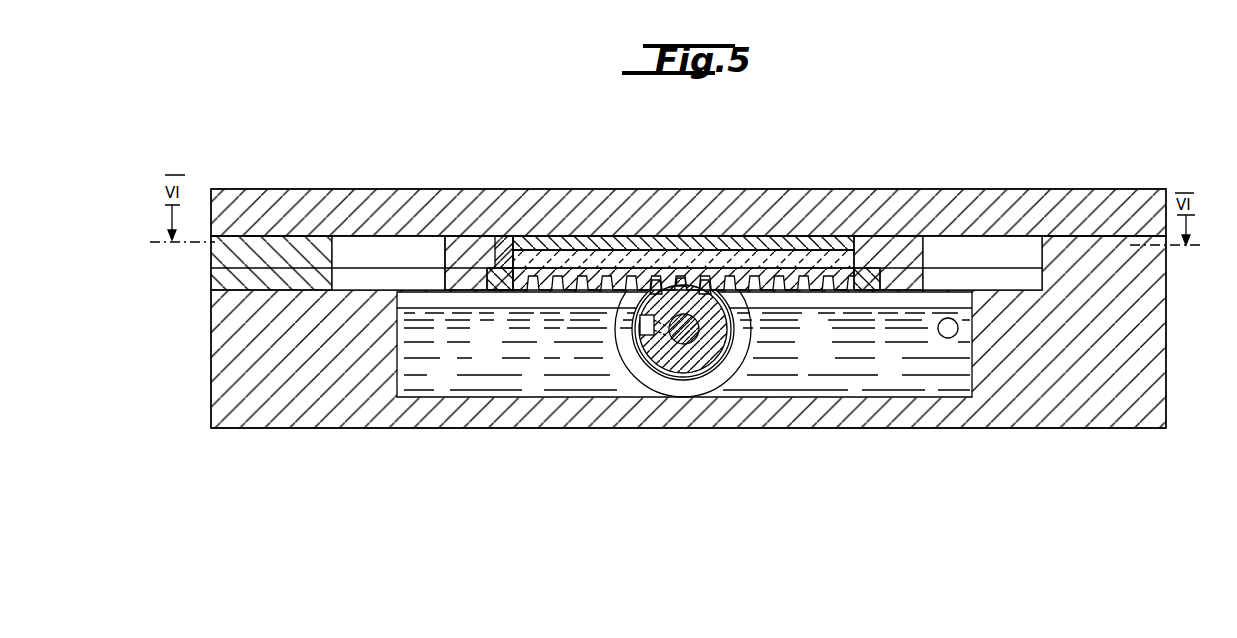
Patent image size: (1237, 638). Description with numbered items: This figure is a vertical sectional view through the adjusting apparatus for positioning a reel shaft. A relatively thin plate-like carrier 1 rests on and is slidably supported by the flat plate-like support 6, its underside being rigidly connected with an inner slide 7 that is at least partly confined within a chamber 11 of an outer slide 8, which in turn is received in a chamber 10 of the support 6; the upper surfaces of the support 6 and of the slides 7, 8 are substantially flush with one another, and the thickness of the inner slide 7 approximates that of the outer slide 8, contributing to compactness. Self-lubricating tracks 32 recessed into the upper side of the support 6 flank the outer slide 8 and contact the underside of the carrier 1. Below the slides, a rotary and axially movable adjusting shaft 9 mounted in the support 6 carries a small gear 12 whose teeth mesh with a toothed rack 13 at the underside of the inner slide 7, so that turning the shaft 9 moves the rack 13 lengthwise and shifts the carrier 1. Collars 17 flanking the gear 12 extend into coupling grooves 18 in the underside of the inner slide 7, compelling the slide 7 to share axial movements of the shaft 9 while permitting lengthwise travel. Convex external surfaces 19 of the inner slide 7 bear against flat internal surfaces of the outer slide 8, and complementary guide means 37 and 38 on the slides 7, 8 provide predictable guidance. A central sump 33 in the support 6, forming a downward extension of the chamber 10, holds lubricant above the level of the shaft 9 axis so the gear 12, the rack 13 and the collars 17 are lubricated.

The carrier 1 is at (312, 208).
The support 6 is at (272, 403).
The inner slide 7 is at (832, 240).
The outer slide 8 is at (467, 243).
The adjusting shaft 9 is at (685, 333).
The chamber 10 is at (981, 250).
The chamber 11 is at (515, 240).
The gear 12 is at (683, 285).
The toothed rack 13 is at (808, 293).
The collar 17 is at (635, 363).
The coupling groove 18 is at (577, 240).
The convex external surface 19 is at (500, 245).
The track 32 is at (256, 247).
The sump 33 is at (478, 383).
The guide means 37 is at (497, 292).
The guide means 38 is at (508, 240).